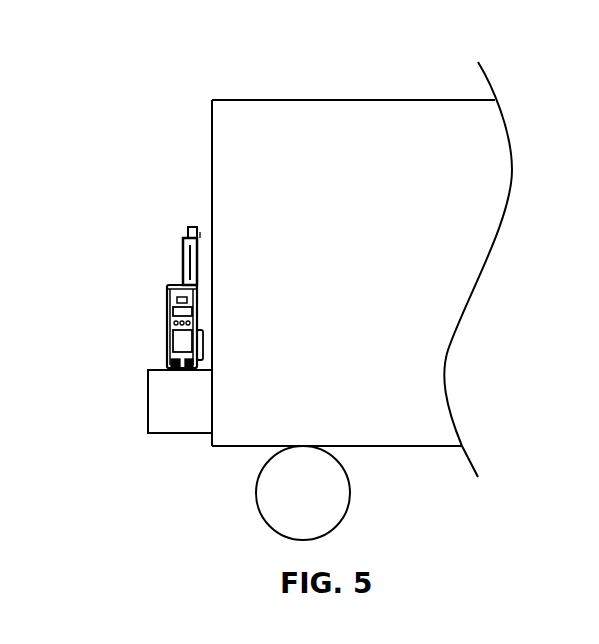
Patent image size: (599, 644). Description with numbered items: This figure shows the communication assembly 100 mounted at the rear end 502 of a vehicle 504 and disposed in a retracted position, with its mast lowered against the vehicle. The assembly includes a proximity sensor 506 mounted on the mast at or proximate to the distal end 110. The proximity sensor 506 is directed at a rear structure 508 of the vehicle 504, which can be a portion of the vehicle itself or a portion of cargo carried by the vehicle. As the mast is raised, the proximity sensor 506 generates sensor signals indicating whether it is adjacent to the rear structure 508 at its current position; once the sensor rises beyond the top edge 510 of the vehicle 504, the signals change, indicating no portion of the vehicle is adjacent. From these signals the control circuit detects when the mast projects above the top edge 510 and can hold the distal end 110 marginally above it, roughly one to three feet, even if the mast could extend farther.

The vehicle 504 is at (400, 100).
The top edge 510 is at (212, 105).
The rear structure 508 is at (212, 172).
The proximity sensor 506 is at (200, 232).
The rear end 502 is at (122, 373).
The communication assembly 100 is at (167, 302).
The distal end 110 is at (183, 232).